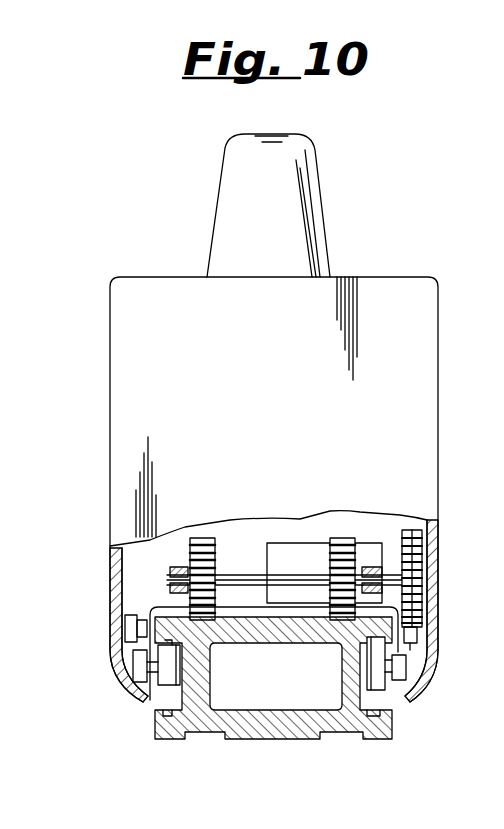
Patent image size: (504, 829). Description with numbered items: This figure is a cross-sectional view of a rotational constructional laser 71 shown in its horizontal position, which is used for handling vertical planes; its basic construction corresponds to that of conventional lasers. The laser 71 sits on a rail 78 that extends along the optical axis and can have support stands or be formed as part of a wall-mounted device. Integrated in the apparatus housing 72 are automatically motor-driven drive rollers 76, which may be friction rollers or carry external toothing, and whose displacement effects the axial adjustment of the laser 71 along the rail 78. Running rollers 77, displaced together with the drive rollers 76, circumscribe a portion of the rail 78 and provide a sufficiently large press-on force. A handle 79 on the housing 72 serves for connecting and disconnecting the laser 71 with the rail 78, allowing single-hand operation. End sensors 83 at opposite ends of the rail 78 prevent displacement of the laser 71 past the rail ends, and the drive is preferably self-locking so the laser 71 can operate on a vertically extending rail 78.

The rotational constructional laser 71 is at (196, 236).
The apparatus housing 72 is at (401, 292).
The drive rollers 76 is at (204, 540).
The running rollers 77 is at (160, 684).
The rail 78 is at (294, 727).
The handle 79 is at (288, 178).
The end sensors 83 is at (133, 616).